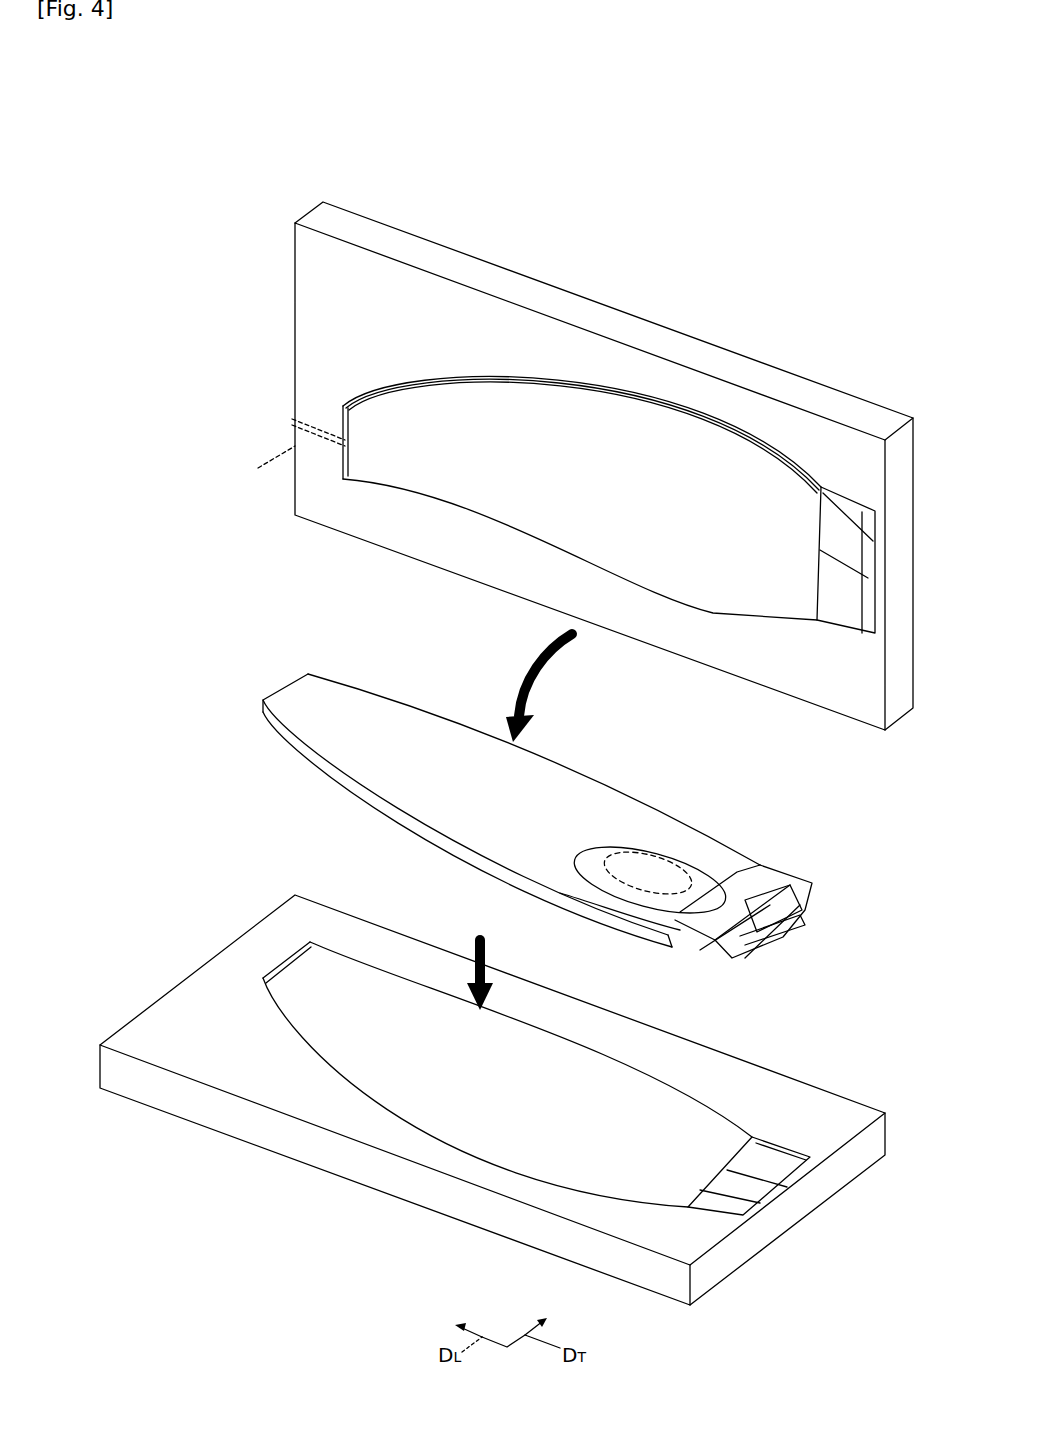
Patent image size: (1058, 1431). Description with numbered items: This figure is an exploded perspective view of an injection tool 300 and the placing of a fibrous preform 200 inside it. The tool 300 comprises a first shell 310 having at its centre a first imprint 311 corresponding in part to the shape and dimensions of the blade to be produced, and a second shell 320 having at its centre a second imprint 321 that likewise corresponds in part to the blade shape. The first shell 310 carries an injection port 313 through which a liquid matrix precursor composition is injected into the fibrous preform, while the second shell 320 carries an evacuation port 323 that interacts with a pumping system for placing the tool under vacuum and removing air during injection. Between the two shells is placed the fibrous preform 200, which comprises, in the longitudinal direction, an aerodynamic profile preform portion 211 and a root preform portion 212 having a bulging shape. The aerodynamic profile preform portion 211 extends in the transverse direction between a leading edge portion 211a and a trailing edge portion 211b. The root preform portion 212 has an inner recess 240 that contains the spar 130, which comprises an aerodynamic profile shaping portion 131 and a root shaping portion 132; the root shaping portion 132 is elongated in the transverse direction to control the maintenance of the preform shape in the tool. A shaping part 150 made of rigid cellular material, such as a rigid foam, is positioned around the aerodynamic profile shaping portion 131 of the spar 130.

The injection tool 300 is at (146, 520).
The first shell 310 is at (195, 958).
The second shell 320 is at (290, 373).
The second imprint 321 is at (655, 548).
The evacuation port 323 is at (285, 415).
The first imprint 311 is at (647, 1107).
The injection port 313 is at (743, 1220).
The fibrous preform 200 is at (265, 676).
The aerodynamic profile preform portion 211 is at (356, 727).
The leading edge portion 211a is at (620, 928).
The trailing edge portion 211b is at (612, 778).
The root preform portion 212 is at (763, 873).
The spar 130 is at (787, 930).
The aerodynamic profile shaping portion 131 is at (700, 850).
The root shaping portion 132 is at (800, 918).
The shaping part 150 is at (660, 850).
The inner recess 240 is at (587, 887).